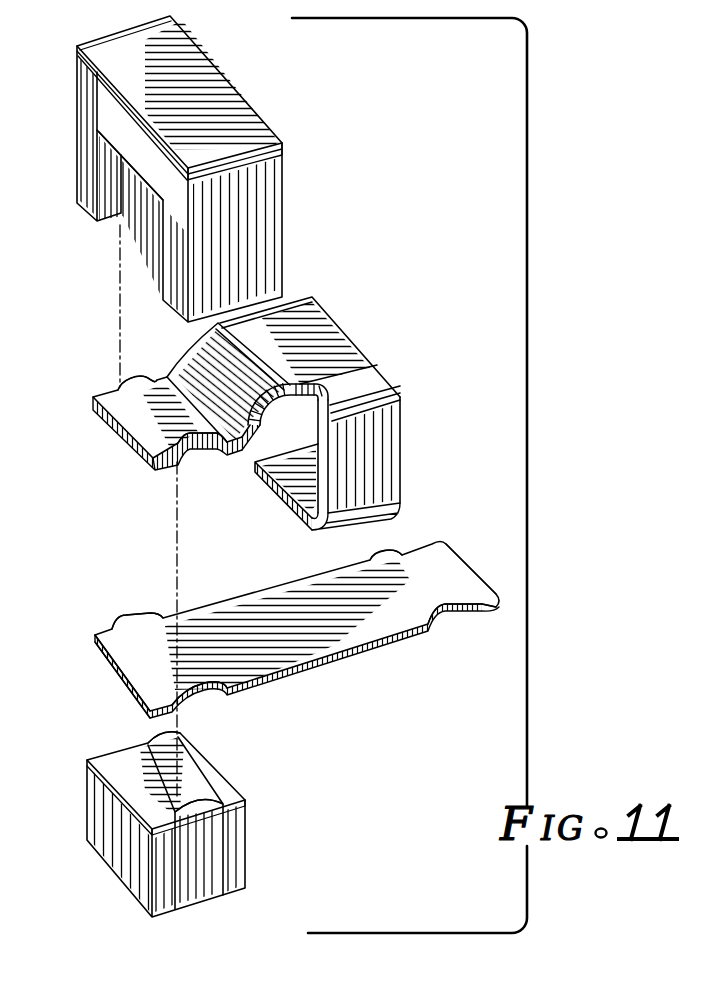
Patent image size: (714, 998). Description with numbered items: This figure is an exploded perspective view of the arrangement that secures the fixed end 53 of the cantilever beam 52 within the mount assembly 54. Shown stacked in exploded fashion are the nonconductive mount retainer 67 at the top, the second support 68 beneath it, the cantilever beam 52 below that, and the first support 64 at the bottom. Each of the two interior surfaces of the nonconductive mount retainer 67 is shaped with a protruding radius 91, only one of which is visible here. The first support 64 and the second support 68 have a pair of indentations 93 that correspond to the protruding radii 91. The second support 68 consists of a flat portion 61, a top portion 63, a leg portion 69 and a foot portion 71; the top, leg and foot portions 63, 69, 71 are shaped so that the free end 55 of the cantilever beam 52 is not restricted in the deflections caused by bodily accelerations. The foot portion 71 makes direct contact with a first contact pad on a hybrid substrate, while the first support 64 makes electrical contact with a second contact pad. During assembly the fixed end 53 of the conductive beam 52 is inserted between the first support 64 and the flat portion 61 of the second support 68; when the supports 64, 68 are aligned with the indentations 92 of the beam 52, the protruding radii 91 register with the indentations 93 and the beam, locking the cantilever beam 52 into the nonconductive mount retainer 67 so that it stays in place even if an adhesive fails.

The cantilever beam 52 is at (340, 664).
The fixed end 53 is at (106, 666).
The mount assembly 54 is at (387, 255).
The free end 55 is at (479, 585).
The flat portion 61 is at (120, 435).
The top portion 63 is at (325, 342).
The first support 64 is at (246, 858).
The nonconductive mount retainer 67 is at (104, 28).
The second support 68 is at (373, 358).
The leg portion 69 is at (400, 444).
The foot portion 71 is at (258, 483).
The protruding radius 91 is at (160, 212).
The indentations 92 is at (395, 543).
The indentations 93 is at (140, 387).